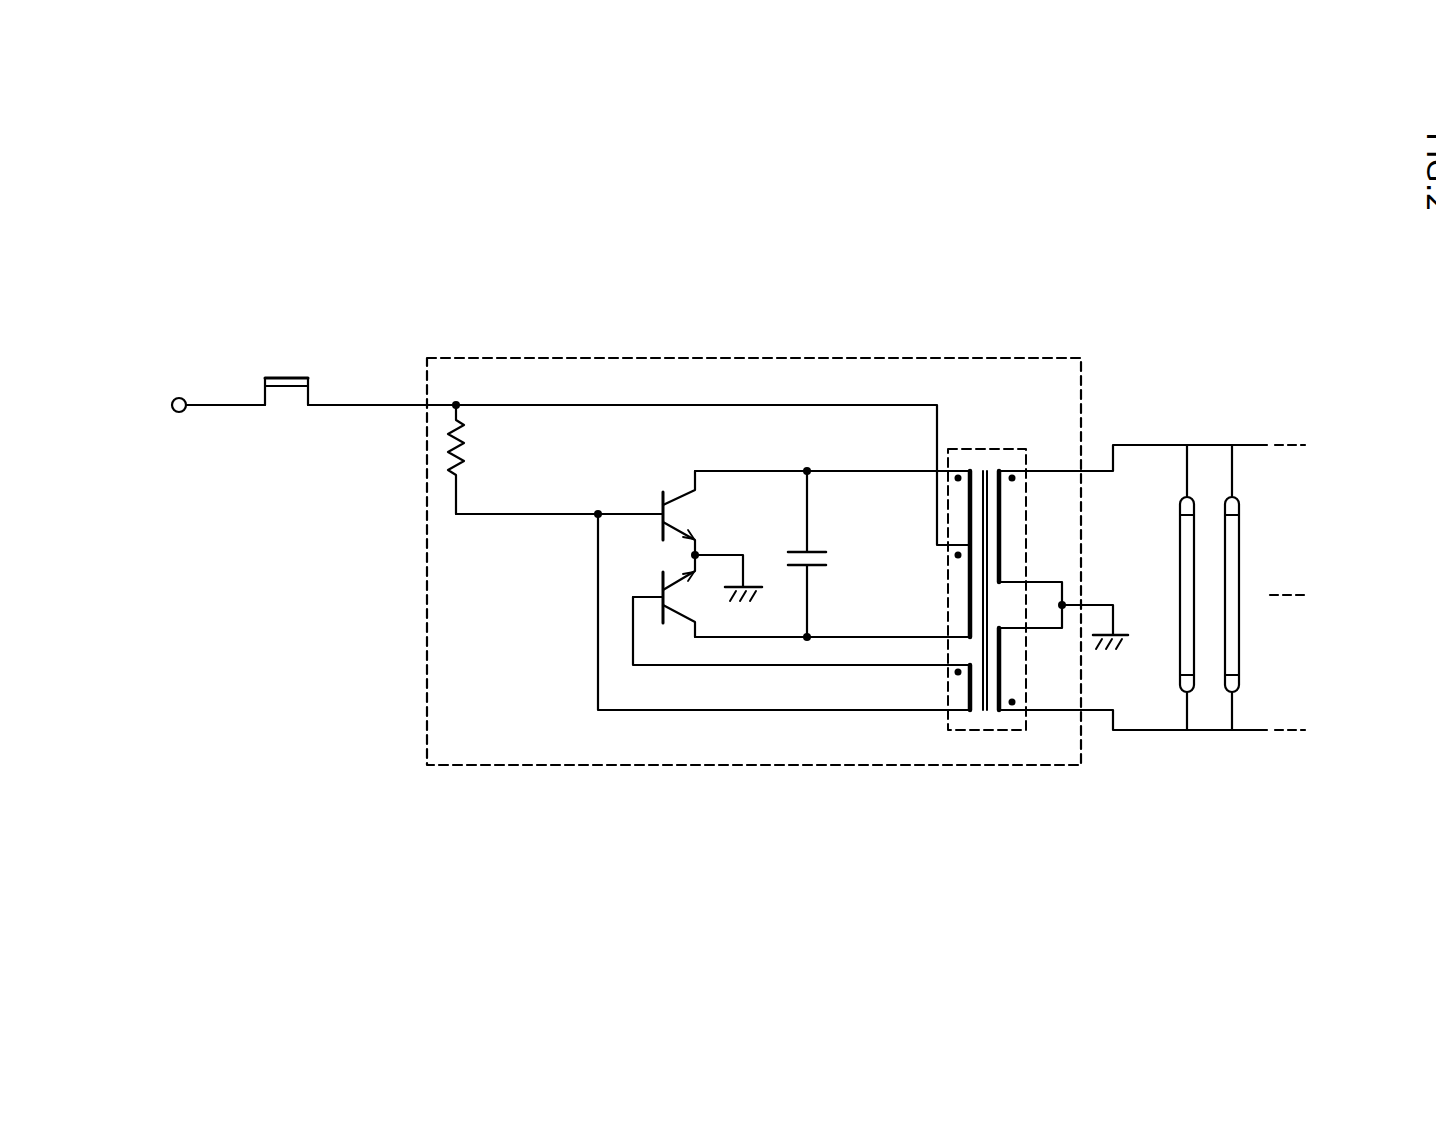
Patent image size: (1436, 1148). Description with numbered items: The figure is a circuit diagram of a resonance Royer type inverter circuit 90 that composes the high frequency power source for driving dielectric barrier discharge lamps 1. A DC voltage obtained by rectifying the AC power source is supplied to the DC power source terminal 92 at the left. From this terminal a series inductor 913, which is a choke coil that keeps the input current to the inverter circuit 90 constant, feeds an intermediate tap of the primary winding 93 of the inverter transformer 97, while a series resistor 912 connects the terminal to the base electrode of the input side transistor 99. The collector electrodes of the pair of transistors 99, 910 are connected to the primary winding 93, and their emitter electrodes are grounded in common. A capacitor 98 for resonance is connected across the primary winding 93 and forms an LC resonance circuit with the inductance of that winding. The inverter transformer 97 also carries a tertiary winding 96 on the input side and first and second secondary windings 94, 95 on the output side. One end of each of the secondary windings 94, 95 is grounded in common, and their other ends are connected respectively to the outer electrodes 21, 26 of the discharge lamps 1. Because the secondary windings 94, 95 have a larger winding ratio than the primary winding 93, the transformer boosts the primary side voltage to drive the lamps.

The dielectric barrier discharge lamp 1 is at (1249, 587).
The outer electrode 21 is at (1188, 495).
The outer electrode 26 is at (1196, 675).
The inverter circuit 90 is at (840, 356).
The DC power source terminal 92 is at (180, 413).
The series inductor 913 is at (287, 390).
The series resistor 912 is at (465, 452).
The transistor 99 is at (680, 512).
The transistor 910 is at (668, 597).
The capacitor 98 is at (815, 560).
The inverter transformer 97 is at (1038, 589).
The primary winding 93 is at (960, 470).
The tertiary winding 96 is at (963, 690).
The first secondary winding 94 is at (1005, 513).
The second secondary winding 95 is at (1008, 663).